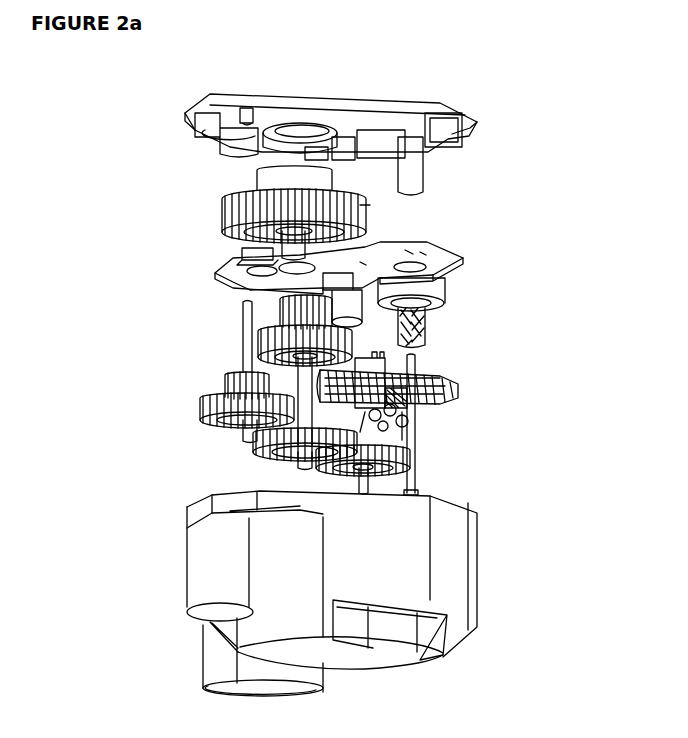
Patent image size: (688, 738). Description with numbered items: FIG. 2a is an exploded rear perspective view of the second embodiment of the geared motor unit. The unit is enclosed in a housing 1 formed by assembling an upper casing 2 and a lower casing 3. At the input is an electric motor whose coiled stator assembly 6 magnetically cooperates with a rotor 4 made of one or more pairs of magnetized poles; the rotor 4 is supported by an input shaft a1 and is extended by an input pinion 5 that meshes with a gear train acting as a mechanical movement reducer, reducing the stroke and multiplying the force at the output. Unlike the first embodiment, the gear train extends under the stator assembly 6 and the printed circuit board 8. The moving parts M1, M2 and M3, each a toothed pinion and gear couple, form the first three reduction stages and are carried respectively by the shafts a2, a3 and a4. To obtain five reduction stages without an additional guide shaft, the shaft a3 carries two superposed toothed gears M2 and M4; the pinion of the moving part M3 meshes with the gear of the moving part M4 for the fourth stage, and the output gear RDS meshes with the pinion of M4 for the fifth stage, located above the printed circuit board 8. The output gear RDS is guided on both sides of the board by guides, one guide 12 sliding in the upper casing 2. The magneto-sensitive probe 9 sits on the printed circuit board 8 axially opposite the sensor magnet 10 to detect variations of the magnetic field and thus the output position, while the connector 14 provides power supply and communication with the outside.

The housing 1 is at (78, 560).
The upper casing 2 is at (190, 106).
The lower casing 3 is at (207, 560).
The rotor 4 is at (435, 287).
The input pinion 5 is at (428, 328).
The coiled stator assembly 6 is at (460, 389).
The printed circuit board 8 is at (218, 274).
The magneto-sensitive probe 9 is at (217, 251).
The sensor magnet 10 is at (224, 232).
The guide 12 is at (258, 176).
The connector 14 is at (215, 655).
The moving part M1 is at (405, 455).
The moving part M2 is at (255, 448).
The moving part M3 is at (200, 404).
The moving part M4 is at (288, 326).
The input shaft a1 is at (418, 434).
The shaft a2 is at (370, 487).
The shaft a3 is at (297, 470).
The shaft a4 is at (245, 348).
The output gear RDS is at (370, 207).